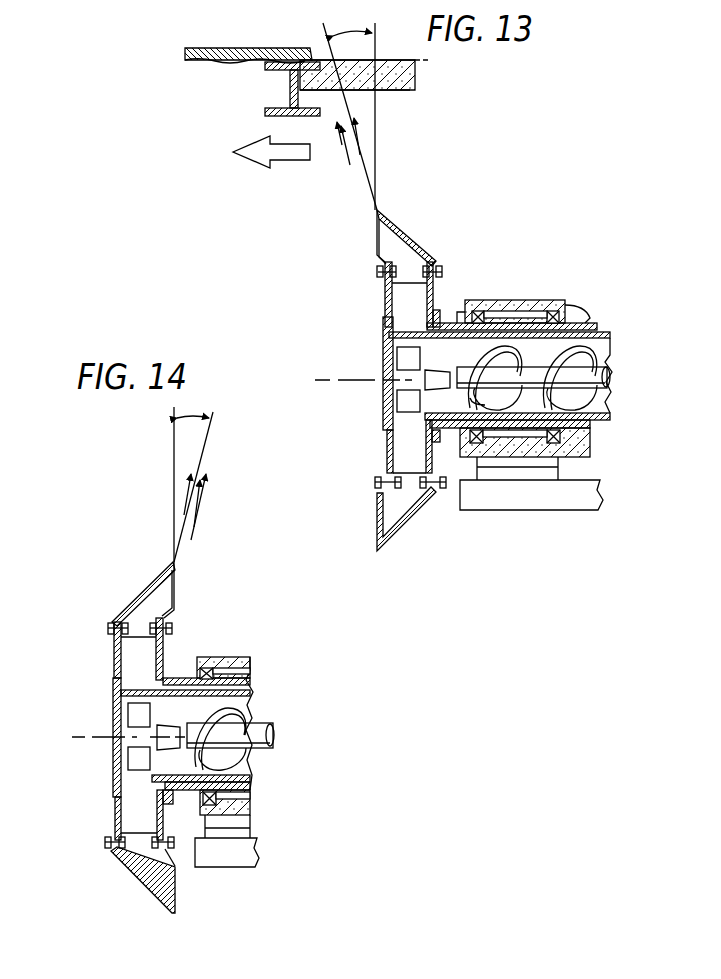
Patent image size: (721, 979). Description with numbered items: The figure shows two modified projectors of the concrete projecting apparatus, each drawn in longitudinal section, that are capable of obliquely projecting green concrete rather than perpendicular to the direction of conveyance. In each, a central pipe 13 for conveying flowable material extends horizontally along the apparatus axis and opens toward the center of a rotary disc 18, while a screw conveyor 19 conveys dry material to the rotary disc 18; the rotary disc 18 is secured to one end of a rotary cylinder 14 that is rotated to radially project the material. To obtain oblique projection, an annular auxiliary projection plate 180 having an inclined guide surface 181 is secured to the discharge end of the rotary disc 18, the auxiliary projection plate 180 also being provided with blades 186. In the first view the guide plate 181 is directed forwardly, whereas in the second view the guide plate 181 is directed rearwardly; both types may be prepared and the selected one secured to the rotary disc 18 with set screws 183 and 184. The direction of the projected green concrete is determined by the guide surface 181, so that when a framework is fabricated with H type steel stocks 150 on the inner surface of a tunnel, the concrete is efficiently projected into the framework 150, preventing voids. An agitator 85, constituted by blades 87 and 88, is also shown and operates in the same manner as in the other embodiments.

In FIG. 13, the H type steel stocks 150 is at (290, 97).
In FIG. 13, the auxiliary projection plate 180 is at (430, 262).
In FIG. 14, the auxiliary projection plate 180 is at (123, 610).
In FIG. 13, the inclined guide surface 181 is at (413, 247).
In FIG. 14, the inclined guide surface 181 is at (143, 597).
In FIG. 13, the set screw 183 is at (442, 272).
In FIG. 14, the set screw 183 is at (172, 628).
In FIG. 13, the set screw 184 is at (377, 272).
In FIG. 14, the set screw 184 is at (108, 628).
In FIG. 13, the blades 186 is at (383, 232).
In FIG. 14, the blades 186 is at (160, 597).
In FIG. 13, the agitator 85 is at (363, 349).
In FIG. 14, the agitator 85 is at (94, 737).
In FIG. 13, the blade 87 is at (432, 376).
In FIG. 14, the blade 87 is at (120, 708).
In FIG. 13, the blade 88 is at (397, 353).
In FIG. 14, the blade 88 is at (167, 733).
In FIG. 13, the rotary cylinder 14 is at (512, 330).
In FIG. 13, the rotary disc 18 is at (383, 446).
In FIG. 14, the screw conveyor 19 is at (228, 712).
In FIG. 14, the central pipe 13 is at (262, 725).